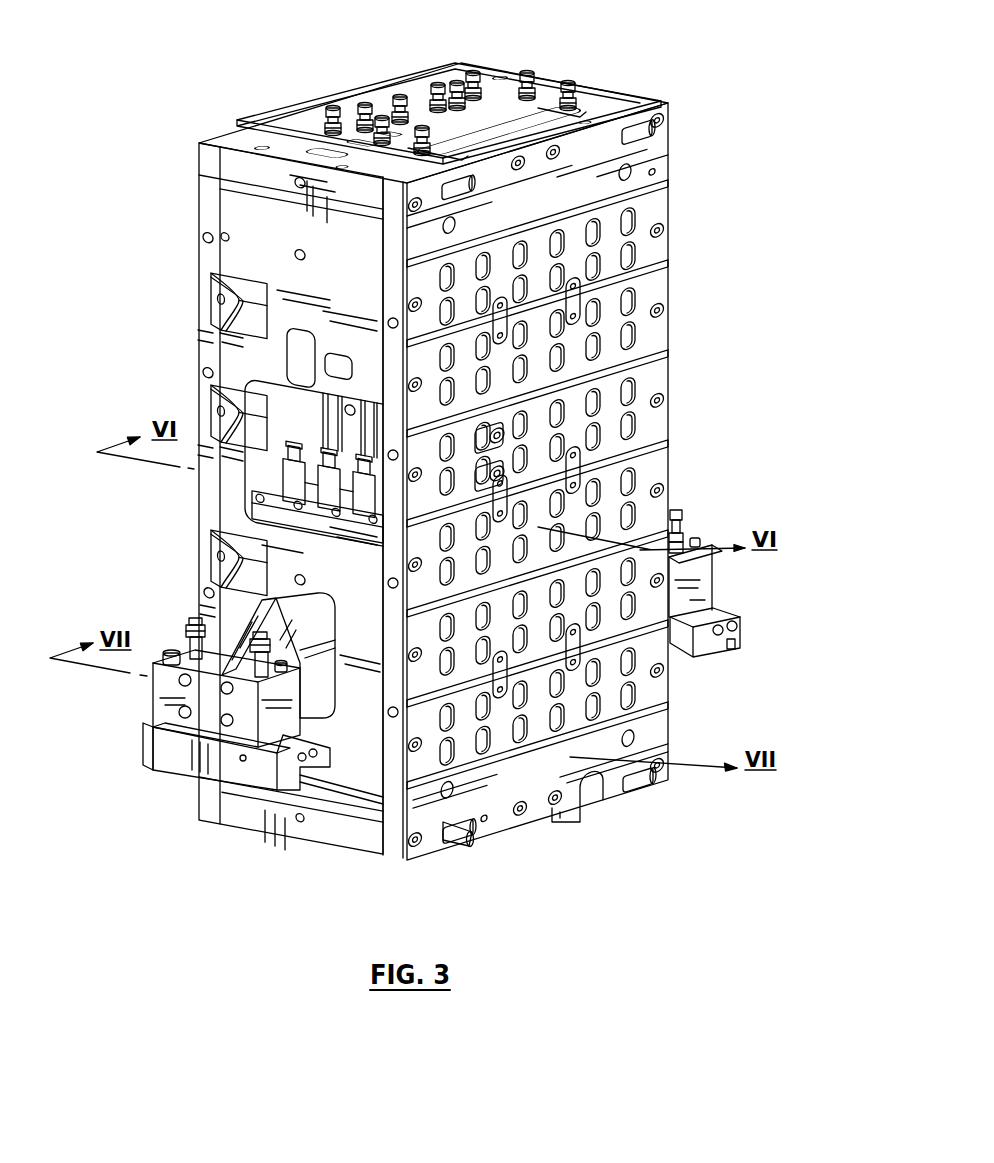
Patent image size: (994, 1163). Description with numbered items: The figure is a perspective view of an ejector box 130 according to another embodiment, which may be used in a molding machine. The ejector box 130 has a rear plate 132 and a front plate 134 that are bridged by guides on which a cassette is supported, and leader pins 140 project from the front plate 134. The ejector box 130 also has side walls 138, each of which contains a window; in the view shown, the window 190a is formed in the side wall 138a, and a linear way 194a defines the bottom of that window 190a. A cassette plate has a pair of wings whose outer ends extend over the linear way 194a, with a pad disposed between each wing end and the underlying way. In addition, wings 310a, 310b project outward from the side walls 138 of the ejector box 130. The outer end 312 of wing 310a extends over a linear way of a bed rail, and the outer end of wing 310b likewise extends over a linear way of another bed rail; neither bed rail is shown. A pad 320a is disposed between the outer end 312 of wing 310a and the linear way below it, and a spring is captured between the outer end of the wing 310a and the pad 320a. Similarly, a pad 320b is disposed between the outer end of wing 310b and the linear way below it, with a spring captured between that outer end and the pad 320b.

The ejector box 130 is at (709, 167).
The rear plate 132 is at (199, 212).
The front plate 134 is at (665, 337).
The top plate 138 is at (517, 78).
The side wall 138a is at (240, 253).
The leader pins 140 is at (468, 840).
The window 190a is at (255, 463).
The linear way 194a is at (268, 518).
The wing 310a is at (187, 655).
The wing 310b is at (715, 580).
The outer end 312 is at (162, 698).
The pad 320a is at (165, 775).
The pad 320b is at (738, 650).